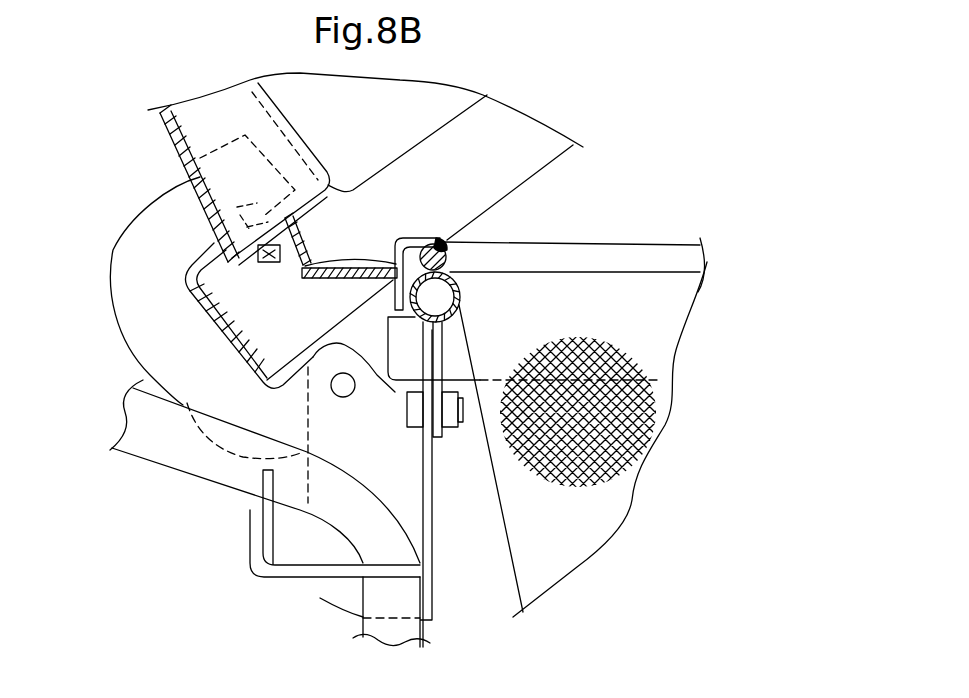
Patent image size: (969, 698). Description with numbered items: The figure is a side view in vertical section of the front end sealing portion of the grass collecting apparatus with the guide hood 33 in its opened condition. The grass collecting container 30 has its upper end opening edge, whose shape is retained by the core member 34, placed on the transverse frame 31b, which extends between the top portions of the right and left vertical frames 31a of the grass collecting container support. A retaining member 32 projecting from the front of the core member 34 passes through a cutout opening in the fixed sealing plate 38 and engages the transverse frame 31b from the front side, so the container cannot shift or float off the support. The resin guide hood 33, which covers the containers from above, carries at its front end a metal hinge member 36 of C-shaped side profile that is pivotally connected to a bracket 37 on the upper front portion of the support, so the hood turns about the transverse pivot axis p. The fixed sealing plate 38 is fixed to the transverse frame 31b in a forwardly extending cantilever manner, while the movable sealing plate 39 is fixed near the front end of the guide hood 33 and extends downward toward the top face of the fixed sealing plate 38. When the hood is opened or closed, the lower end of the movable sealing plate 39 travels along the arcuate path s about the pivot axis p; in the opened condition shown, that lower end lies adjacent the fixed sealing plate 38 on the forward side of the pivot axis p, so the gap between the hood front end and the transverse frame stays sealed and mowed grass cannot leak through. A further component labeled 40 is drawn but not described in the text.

The grass collecting container 30 is at (623, 438).
The vertical frame 31a is at (417, 628).
The transverse frame 31b is at (458, 330).
The retaining member 32 is at (403, 237).
The guide hood 33 is at (177, 152).
The core member 34 is at (447, 250).
The hinge member 36 is at (115, 282).
The bracket 37 is at (428, 485).
The fixed sealing plate 38 is at (324, 280).
The movable sealing plate 39 is at (287, 253).
The bracket 40 is at (395, 282).
The arcuate path s is at (357, 260).
The pivot axis p is at (343, 385).